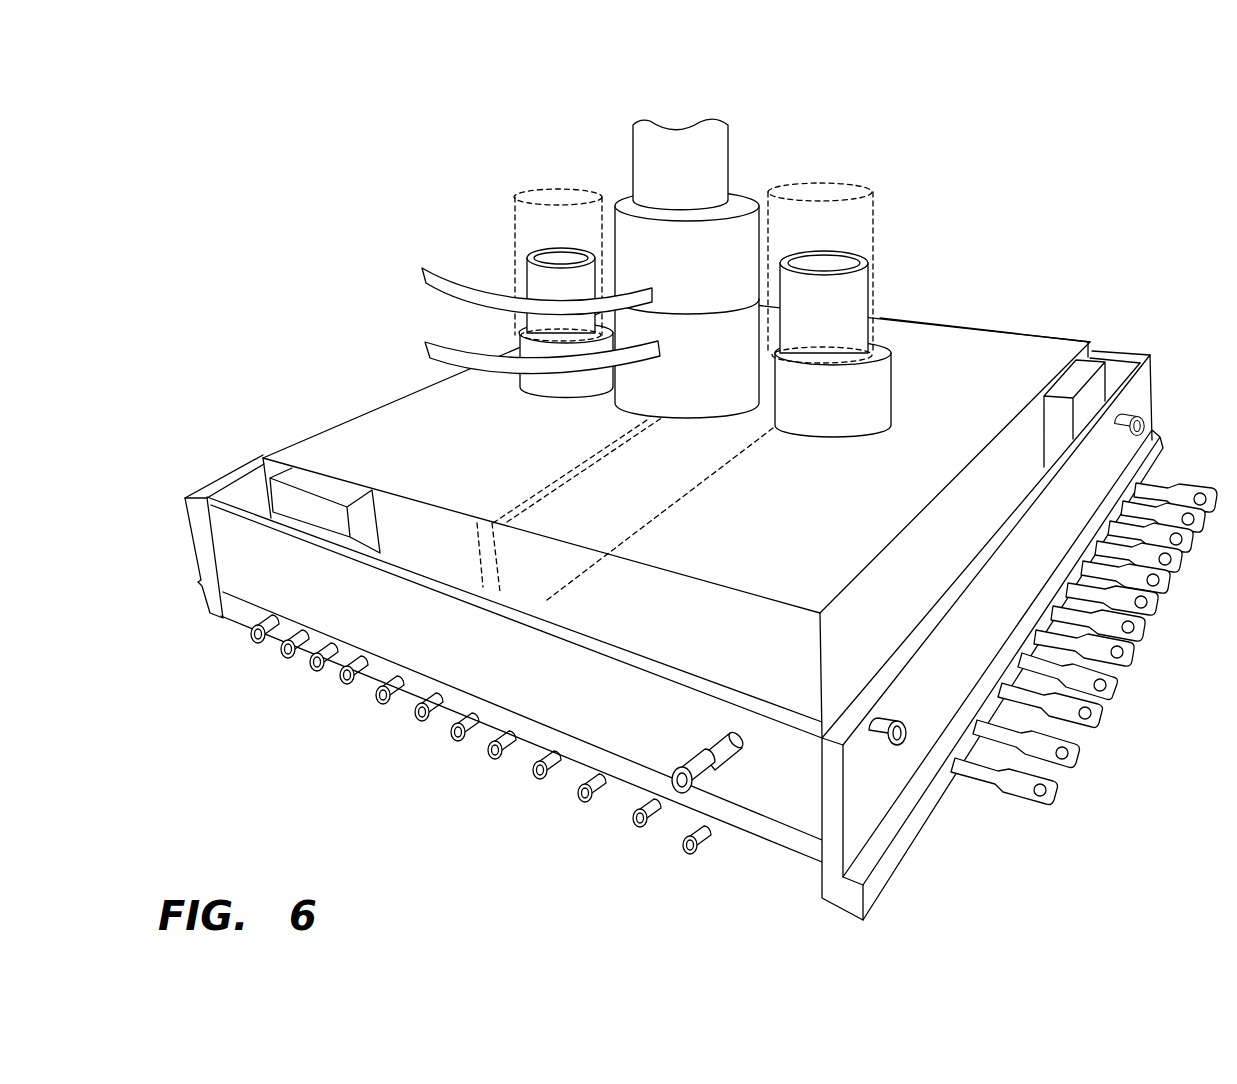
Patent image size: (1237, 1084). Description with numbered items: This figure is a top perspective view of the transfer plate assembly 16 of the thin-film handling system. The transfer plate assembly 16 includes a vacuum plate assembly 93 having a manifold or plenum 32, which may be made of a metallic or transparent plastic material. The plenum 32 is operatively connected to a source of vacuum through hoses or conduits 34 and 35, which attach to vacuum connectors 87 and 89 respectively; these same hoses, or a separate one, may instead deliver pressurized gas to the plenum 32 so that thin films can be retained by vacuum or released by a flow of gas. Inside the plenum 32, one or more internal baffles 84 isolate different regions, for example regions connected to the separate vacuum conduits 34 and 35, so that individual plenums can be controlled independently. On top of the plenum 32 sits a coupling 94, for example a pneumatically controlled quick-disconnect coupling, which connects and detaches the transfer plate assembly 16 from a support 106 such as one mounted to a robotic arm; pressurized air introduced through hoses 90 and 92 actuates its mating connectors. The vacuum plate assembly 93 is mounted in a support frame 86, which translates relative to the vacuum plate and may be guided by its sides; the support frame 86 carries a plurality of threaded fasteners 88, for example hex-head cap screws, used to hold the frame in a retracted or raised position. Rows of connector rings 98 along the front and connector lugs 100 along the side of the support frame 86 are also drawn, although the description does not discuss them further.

The transfer plate assembly 16 is at (1027, 136).
The plenum 32 is at (691, 595).
The conduit 34 is at (797, 203).
The conduit 35 is at (540, 207).
The internal baffle 84 is at (582, 468).
The support frame 86 is at (887, 877).
The vacuum connector 87 is at (843, 412).
The threaded fastener 88 is at (1148, 418).
The vacuum connector 89 is at (559, 384).
The hose 90 is at (426, 282).
The hose 92 is at (428, 355).
The vacuum plate assembly 93 is at (968, 347).
The coupling 94 is at (627, 207).
The front connector rings 98 is at (457, 733).
The side connector lugs 100 is at (1130, 657).
The support 106 is at (672, 150).